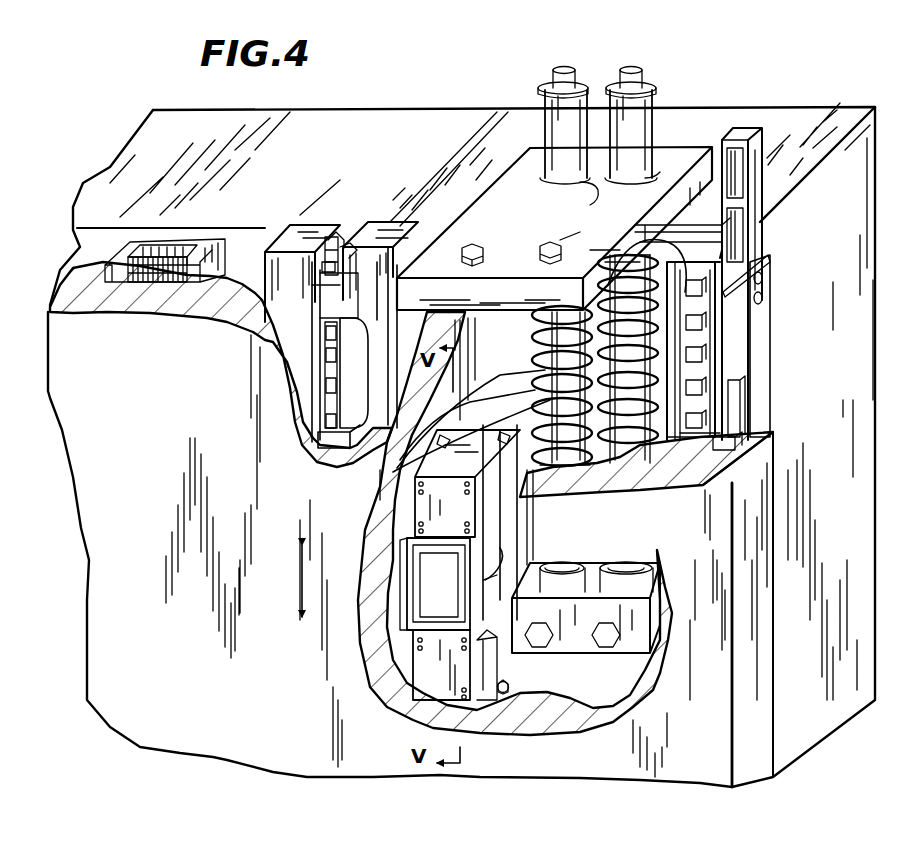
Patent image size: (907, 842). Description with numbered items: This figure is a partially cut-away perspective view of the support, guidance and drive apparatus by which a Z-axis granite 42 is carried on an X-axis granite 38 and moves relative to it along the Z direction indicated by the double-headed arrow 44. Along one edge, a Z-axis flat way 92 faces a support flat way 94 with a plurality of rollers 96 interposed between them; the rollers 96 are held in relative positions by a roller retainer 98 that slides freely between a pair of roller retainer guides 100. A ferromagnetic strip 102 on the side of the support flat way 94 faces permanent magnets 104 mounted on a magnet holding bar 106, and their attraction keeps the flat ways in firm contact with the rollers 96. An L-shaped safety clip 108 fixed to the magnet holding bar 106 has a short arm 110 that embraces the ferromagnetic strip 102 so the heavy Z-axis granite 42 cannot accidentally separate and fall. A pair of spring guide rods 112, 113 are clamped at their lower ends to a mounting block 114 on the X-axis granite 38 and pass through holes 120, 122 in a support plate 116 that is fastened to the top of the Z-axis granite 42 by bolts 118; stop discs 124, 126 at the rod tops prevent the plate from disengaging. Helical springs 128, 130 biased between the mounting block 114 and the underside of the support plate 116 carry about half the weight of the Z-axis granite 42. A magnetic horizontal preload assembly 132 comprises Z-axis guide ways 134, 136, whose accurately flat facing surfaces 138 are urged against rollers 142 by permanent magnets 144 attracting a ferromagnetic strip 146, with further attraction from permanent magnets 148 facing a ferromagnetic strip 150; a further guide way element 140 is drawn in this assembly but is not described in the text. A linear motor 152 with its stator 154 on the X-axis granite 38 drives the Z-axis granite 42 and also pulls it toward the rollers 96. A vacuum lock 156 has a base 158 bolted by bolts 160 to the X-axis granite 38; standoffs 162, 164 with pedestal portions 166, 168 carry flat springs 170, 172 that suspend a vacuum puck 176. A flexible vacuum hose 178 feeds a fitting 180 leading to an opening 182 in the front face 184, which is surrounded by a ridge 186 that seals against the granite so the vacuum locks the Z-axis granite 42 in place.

The X-axis granite 38 is at (862, 523).
The Z-axis granite 42 is at (762, 545).
The double-headed arrow 44 is at (300, 580).
The Z-axis flat way 92 is at (703, 240).
The support flat way 94 is at (688, 440).
The rollers 96 is at (700, 318).
The roller retainer 98 is at (668, 234).
The roller retainer guides 100 is at (585, 247).
The ferromagnetic strip 102 is at (730, 440).
The permanent magnets 104 is at (748, 387).
The magnet holding bar 106 is at (750, 188).
The L-shaped safety clip 108 is at (766, 259).
The short arm 110 is at (771, 276).
The spring guide rod 112 is at (545, 130).
The spring guide rod 113 is at (653, 130).
The mounting block 114 is at (580, 655).
The support plate 116 is at (490, 203).
The bolts 118 is at (478, 250).
The hole 120 is at (590, 198).
The hole 122 is at (648, 180).
The stop disc 124 is at (545, 90).
The stop disc 126 is at (656, 88).
The helical spring 128 is at (582, 472).
The helical spring 130 is at (617, 442).
The magnetic horizontal preload assembly 132 is at (400, 196).
The Z-axis guide way 134 is at (313, 228).
The Z-axis guide way 136 is at (405, 235).
The flat facing surfaces 138 is at (335, 237).
The guide bracket 140 is at (354, 348).
The rollers 142 is at (348, 407).
The permanent magnets 144 is at (340, 247).
The ferromagnetic strip 146 is at (348, 248).
The permanent magnets 148 is at (320, 290).
The ferromagnetic strip 150 is at (330, 268).
The linear motor 152 is at (233, 213).
The stator 154 is at (177, 253).
The vacuum lock 156 is at (451, 595).
The base 158 is at (520, 395).
The bolts 160 is at (495, 420).
The standoff 162 is at (463, 435).
The standoff 164 is at (505, 693).
The pedestal portion 166 is at (478, 488).
The pedestal portion 168 is at (500, 693).
The flat spring 170 is at (457, 486).
The flat spring 172 is at (407, 715).
The vacuum puck 176 is at (492, 646).
The flexible vacuum hose 178 is at (496, 548).
The fitting 180 is at (498, 585).
The opening 182 is at (452, 573).
The front face 184 is at (428, 603).
The ridge 186 is at (395, 530).